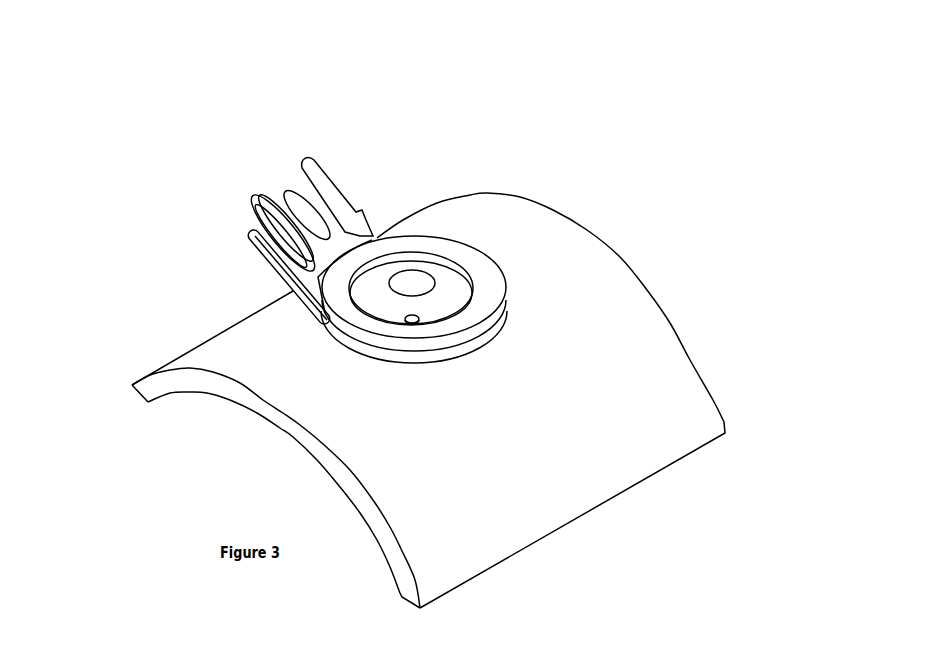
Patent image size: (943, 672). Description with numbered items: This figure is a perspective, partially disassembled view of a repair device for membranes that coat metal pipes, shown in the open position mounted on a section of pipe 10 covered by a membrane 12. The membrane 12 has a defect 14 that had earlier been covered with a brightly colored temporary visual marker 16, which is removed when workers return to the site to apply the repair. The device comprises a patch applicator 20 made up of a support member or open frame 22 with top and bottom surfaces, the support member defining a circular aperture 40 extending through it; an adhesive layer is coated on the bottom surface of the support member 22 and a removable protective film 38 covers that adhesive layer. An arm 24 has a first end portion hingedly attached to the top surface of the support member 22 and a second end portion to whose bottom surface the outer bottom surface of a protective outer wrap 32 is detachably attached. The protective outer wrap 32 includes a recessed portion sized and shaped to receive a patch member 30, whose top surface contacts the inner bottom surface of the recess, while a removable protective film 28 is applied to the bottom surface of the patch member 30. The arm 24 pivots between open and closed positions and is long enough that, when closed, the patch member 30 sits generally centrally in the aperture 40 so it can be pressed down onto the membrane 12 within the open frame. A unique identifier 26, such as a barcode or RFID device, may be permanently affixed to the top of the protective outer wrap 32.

The pipe 10 is at (160, 388).
The membrane 12 is at (513, 223).
The defect 14 is at (420, 315).
The temporary visual marker 16 is at (412, 277).
The patch applicator 20 is at (505, 307).
The support member 22 is at (480, 268).
The arm 24 is at (252, 241).
The unique identifier 26 is at (282, 205).
The removable protective film 28 is at (333, 187).
The patch member 30 is at (302, 193).
The protective outer wrap 32 is at (253, 202).
The removable protective film 38 is at (473, 346).
The aperture 40 is at (363, 302).